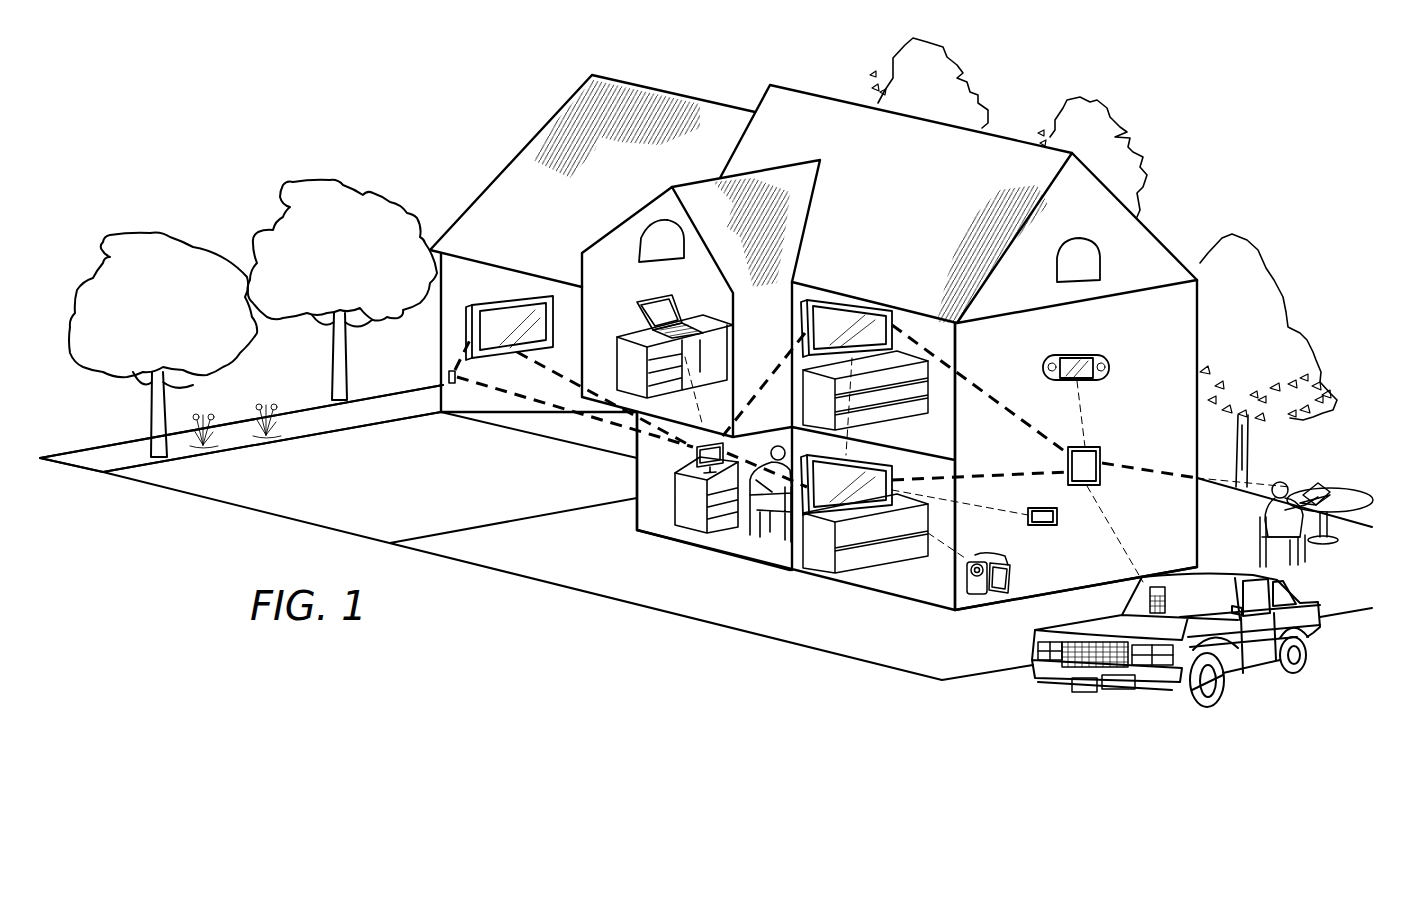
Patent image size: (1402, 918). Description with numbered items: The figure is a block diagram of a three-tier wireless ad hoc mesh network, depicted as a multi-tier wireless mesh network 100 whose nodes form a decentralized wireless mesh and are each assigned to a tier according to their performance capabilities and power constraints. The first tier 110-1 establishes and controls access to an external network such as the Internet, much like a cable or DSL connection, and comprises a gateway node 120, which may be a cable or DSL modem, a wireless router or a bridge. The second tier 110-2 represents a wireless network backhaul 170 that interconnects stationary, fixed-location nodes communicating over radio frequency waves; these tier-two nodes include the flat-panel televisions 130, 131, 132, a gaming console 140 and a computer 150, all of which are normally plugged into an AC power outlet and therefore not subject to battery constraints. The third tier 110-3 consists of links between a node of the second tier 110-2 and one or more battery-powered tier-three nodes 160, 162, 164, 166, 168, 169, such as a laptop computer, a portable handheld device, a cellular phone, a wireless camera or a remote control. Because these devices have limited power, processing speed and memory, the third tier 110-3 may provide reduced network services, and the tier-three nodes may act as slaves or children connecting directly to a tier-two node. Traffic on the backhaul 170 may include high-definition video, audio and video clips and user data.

The multi-tier wireless mesh network 100 is at (1210, 125).
The first tier 110-1 is at (388, 405).
The second tier 110-2 is at (657, 473).
The third tier 110-3 is at (1053, 562).
The gateway node 120 is at (448, 377).
The flat-panel television 130 is at (498, 293).
The flat-panel television 131 is at (820, 303).
The flat-panel television 132 is at (805, 510).
The gaming console 140 is at (1098, 447).
The computer 150 is at (707, 443).
The tier-3 node 160 is at (643, 325).
The tier-3 node 162 is at (990, 597).
The tier-3 node 164 is at (1092, 362).
The tier-3 node 166 is at (1318, 487).
The tier-3 node 168 is at (1160, 587).
The tier-3 node 169 is at (1047, 510).
The backhaul 170 is at (555, 408).